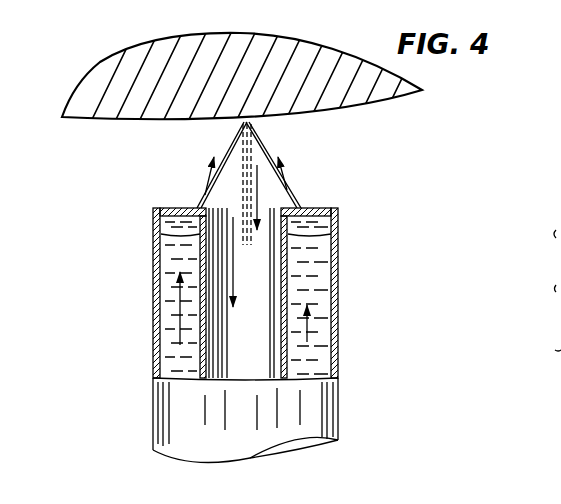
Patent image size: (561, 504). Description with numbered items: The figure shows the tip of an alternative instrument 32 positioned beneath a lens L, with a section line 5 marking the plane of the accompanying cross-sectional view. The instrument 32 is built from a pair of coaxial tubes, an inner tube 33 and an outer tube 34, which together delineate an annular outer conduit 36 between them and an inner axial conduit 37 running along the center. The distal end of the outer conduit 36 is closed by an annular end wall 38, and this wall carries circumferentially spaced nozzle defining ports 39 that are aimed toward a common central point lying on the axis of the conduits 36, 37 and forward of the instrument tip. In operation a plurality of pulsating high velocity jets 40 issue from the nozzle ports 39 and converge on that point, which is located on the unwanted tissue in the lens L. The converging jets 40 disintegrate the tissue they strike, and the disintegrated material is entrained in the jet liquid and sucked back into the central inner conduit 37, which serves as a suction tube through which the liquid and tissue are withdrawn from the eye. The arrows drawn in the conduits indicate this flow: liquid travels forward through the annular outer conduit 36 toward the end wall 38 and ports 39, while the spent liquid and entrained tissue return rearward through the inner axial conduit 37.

The lens L is at (403, 78).
The section line 5- 5 is at (392, 208).
The instrument 32 is at (139, 329).
The inner tube 33 is at (336, 236).
The outer tube 34 is at (328, 267).
The annular outer conduit 36 is at (330, 296).
The inner axial conduit 37 is at (255, 360).
The annular end wall 38 is at (162, 208).
The nozzle defining ports 39 is at (197, 208).
The pulsating high velocity jets 40 is at (232, 134).